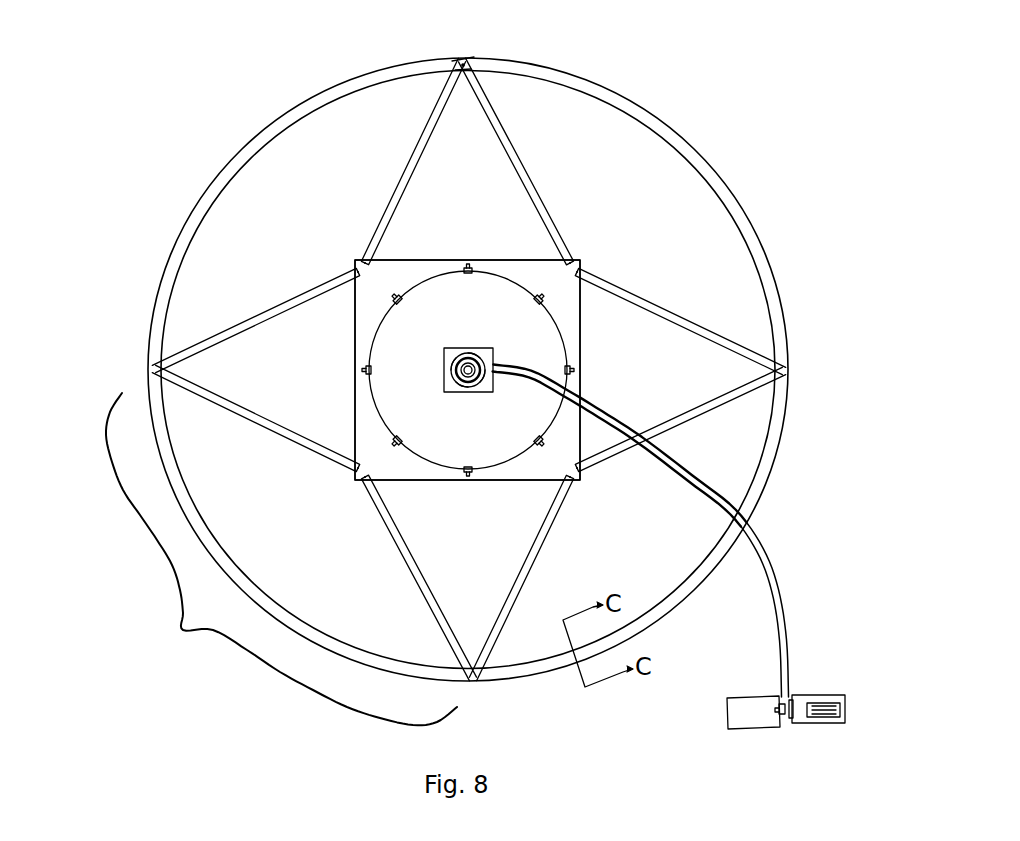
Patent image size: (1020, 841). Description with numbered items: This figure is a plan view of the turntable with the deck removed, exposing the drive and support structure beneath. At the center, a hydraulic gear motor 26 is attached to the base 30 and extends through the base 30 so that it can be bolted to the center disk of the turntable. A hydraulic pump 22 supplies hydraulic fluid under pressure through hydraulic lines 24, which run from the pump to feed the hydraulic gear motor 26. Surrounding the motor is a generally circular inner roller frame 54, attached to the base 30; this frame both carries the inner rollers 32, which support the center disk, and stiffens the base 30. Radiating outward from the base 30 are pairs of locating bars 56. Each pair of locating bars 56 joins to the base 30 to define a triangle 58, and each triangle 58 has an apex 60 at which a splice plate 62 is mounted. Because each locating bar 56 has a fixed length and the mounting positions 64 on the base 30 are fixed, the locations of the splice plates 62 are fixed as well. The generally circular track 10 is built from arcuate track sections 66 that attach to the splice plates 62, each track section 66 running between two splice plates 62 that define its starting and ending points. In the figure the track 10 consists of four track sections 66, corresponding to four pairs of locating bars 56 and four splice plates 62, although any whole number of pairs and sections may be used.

The track 10 is at (245, 142).
The hydraulic pump 22 is at (810, 697).
The hydraulic lines 24 is at (773, 575).
The hydraulic gear motor 26 is at (483, 350).
The base 30 is at (563, 342).
The inner rollers 32 is at (473, 260).
The inner roller frame 54 is at (578, 333).
The locating bars 56 is at (250, 315).
The triangle 58 is at (471, 184).
The apex 60 is at (463, 98).
The splice plate 62 is at (467, 57).
The mounting positions 64 is at (563, 300).
The track sections 66 is at (180, 633).